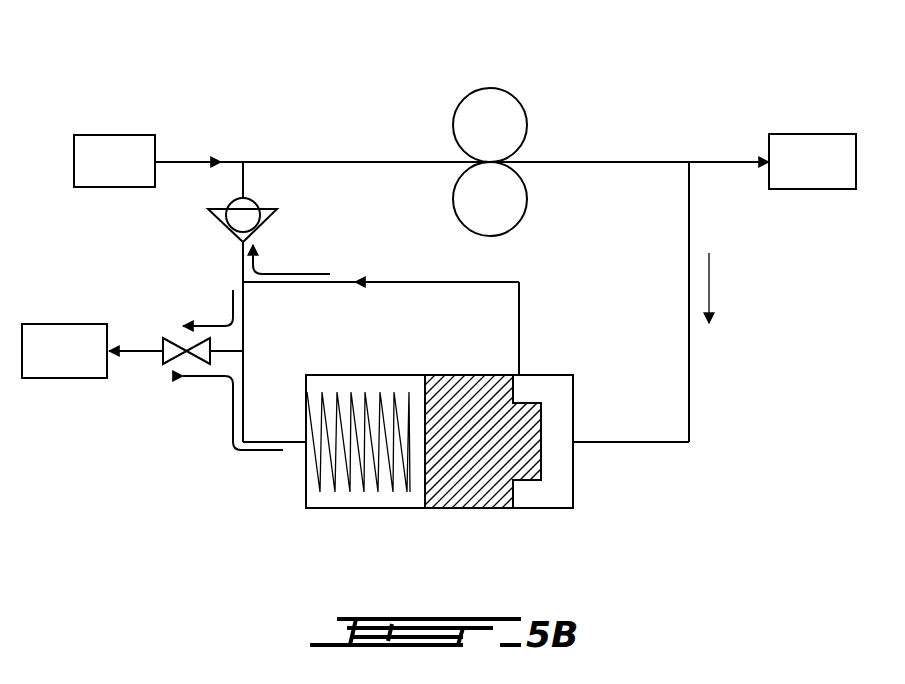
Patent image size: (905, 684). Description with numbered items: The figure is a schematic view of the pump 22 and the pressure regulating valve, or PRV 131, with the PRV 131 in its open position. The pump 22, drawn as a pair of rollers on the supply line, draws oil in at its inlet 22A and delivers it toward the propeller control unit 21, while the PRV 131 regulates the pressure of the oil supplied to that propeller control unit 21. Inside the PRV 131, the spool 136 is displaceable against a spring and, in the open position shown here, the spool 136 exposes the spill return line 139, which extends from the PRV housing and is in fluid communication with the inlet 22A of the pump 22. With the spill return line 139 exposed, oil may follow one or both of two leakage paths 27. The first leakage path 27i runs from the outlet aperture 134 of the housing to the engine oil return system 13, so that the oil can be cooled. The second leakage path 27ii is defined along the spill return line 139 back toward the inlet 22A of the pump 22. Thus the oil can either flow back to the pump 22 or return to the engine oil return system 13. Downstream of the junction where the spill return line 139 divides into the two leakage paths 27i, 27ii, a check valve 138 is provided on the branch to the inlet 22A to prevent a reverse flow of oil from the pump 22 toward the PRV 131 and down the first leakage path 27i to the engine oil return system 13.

The engine oil return system 13 is at (88, 256).
The propeller control unit 21 is at (812, 161).
The pump 22 is at (525, 117).
The inlet of the pump 22A is at (351, 160).
The check valve 138 is at (226, 212).
The spill return line 139 is at (519, 316).
The second leakage path 27ii is at (298, 273).
The first leakage path 27i is at (233, 305).
The oil leakage path 27 is at (233, 413).
The PRV 131 is at (484, 478).
The spool 136 is at (488, 483).
The outlet aperture 134 is at (304, 448).